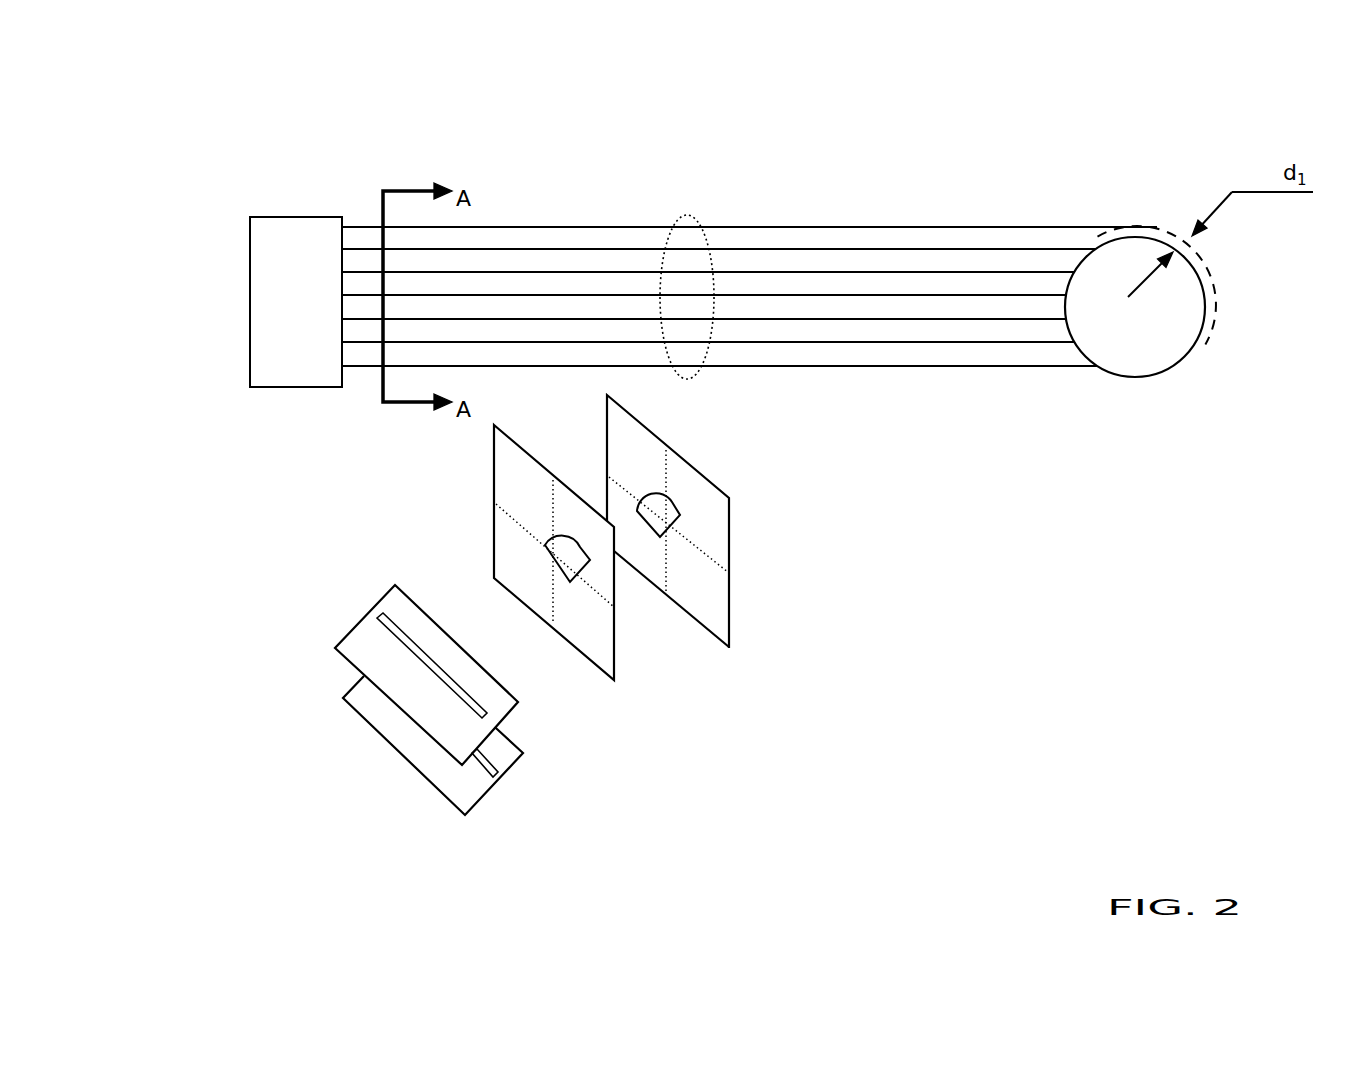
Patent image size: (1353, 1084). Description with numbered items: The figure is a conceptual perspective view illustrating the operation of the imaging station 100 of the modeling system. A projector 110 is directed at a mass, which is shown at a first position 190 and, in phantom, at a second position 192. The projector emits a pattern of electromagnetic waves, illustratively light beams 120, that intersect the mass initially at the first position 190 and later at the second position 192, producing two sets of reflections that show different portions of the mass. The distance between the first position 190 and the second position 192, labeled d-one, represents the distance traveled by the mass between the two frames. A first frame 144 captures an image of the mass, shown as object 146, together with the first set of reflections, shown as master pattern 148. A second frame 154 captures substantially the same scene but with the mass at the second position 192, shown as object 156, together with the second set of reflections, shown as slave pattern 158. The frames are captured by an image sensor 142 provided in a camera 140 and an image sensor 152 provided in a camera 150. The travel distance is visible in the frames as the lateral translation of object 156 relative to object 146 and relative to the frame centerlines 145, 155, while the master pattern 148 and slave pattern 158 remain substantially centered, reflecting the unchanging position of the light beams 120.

The imaging station 100 is at (185, 203).
The projector 110 is at (297, 217).
The light beams 120 is at (680, 215).
The camera 140 is at (353, 660).
The image sensor 142 is at (450, 690).
The first frame 144 is at (615, 672).
The frame centerline 145 is at (553, 597).
The object 146 is at (553, 582).
The master pattern 148 is at (547, 547).
The camera 150 is at (358, 715).
The image sensor 152 is at (468, 765).
The second frame 154 is at (728, 640).
The frame centerline 155 is at (666, 553).
The object 156 is at (673, 508).
The slave pattern 158 is at (645, 515).
The first position 190 is at (1145, 376).
The second position 192 is at (1180, 230).